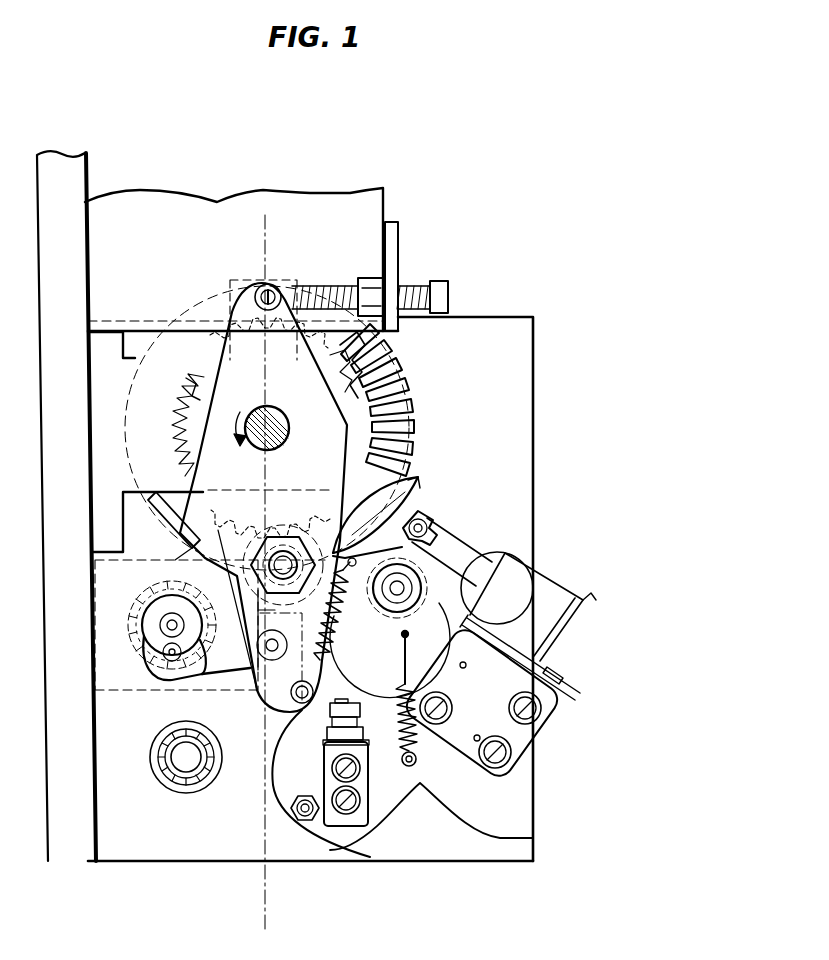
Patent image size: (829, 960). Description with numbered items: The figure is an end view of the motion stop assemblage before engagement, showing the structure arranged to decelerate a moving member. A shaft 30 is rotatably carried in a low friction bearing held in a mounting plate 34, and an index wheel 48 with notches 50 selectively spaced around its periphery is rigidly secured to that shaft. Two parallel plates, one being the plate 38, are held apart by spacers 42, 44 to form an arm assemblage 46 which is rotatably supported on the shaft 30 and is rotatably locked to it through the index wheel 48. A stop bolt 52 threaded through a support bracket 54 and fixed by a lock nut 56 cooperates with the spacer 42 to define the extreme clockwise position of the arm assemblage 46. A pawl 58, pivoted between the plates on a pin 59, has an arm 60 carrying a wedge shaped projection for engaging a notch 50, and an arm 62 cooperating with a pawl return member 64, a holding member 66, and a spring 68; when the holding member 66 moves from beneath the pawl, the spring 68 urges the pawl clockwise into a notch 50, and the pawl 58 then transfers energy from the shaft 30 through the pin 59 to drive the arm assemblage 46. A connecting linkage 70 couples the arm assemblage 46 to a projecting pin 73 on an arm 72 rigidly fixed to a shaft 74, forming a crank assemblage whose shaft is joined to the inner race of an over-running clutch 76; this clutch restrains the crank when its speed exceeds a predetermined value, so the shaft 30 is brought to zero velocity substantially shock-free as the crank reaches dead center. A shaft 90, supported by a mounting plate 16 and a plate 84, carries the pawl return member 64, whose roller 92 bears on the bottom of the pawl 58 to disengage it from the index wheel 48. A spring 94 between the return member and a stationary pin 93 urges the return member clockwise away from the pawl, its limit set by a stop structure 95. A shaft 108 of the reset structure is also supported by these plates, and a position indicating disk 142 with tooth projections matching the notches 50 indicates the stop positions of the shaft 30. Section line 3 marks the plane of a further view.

The section line 3- 3 is at (270, 898).
The mounting plate 16 is at (528, 352).
The shaft 30 is at (290, 440).
The mounting plate 34 is at (130, 352).
The plate 38 is at (192, 390).
The spacer 42 is at (280, 290).
The spacer 44 is at (300, 722).
The arm assemblage 46 is at (232, 303).
The index wheel 48 is at (358, 400).
The notches 50 is at (355, 372).
The stop bolt 52 is at (416, 286).
The support bracket 54 is at (394, 242).
The lock nut 56 is at (374, 280).
The pawl 58 is at (428, 467).
The pin 59 is at (290, 548).
The arm 60 is at (180, 522).
The arm 62 is at (413, 497).
The pawl return member 64 is at (414, 618).
The holding member 66 is at (446, 530).
The spring 68 is at (340, 608).
The connecting linkage 70 is at (222, 672).
The arm 72 is at (150, 650).
The projecting pin 73 is at (170, 672).
The shaft 74 is at (140, 624).
The over-running clutch 76 is at (126, 645).
The plate 84 is at (543, 800).
The shaft 90 is at (294, 705).
The roller 92 is at (416, 584).
The stationary pin 93 is at (415, 763).
The spring 94 is at (398, 740).
The stop structure 95 is at (318, 752).
The shaft 108 is at (178, 770).
The position indicating disk 142 is at (410, 407).